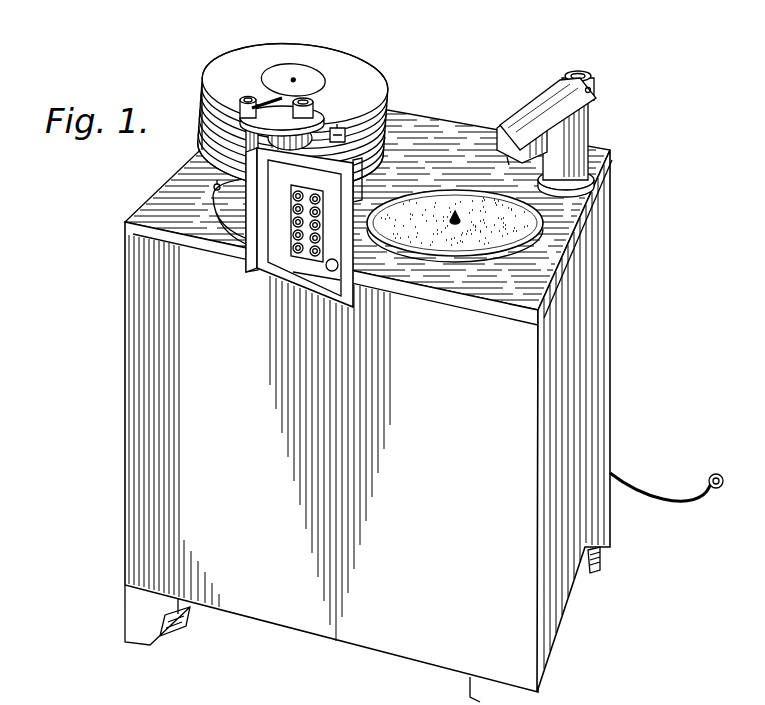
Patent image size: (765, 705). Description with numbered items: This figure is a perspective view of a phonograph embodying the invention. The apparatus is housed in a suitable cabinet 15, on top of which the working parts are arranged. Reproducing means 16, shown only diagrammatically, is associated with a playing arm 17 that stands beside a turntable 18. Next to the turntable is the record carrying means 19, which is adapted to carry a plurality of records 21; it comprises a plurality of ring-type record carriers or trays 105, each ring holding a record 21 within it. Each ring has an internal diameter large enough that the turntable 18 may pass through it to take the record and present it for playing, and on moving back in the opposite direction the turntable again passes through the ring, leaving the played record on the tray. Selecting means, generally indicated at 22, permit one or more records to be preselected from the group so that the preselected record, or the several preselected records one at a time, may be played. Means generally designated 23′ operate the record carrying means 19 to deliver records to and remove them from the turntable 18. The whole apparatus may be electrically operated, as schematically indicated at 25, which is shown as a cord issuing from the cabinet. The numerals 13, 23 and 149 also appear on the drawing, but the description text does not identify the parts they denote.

The cabinet 15 is at (607, 343).
The turntable base 13 is at (193, 150).
The records 21 is at (358, 72).
The record carrying means 19 is at (389, 89).
The record carriers or trays 105 is at (200, 117).
The means for operating the record carrying means 23′ is at (266, 101).
The mechanism bracket 149 is at (385, 133).
The selecting means 22 is at (380, 170).
The selector buttons panel 23 is at (298, 248).
The turntable 18 is at (545, 226).
The reproducing means 16 is at (560, 80).
The playing arm 17 is at (533, 112).
The electrical operating means 25 is at (667, 500).